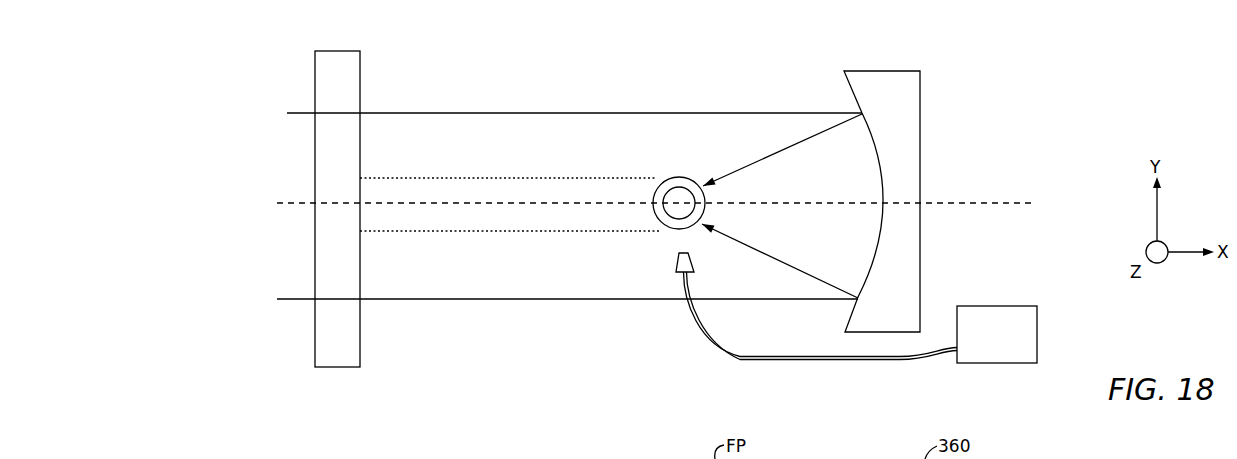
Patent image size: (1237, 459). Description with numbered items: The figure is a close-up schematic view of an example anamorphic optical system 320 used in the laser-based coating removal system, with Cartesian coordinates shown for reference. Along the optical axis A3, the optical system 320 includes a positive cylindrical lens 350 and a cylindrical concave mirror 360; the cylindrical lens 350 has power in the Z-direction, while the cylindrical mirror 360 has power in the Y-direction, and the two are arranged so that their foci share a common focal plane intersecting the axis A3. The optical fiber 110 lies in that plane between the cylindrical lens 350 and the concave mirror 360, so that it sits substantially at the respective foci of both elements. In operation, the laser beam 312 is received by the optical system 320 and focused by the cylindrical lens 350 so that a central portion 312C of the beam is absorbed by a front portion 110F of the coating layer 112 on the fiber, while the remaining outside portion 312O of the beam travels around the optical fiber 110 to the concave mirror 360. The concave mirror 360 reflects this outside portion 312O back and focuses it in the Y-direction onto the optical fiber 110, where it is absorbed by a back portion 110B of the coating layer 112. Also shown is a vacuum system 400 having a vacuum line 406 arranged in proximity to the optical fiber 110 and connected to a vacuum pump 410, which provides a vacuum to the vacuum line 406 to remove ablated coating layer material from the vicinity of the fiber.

The positive cylindrical lens 350 is at (333, 51).
The laser beam 312 is at (293, 294).
The central portion of laser beam 312C is at (490, 177).
The outside portion of laser beam 312O is at (473, 282).
The optical axis A3 is at (973, 203).
The optical fiber 110 is at (679, 170).
The coating layer 112 is at (688, 180).
The front portion of coating layer 110F is at (653, 199).
The back portion of coating layer 110B is at (706, 213).
The cylindrical concave mirror 360 is at (900, 71).
The anamorphic optical system 320 is at (1010, 109).
The vacuum system 400 is at (689, 352).
The vacuum line 406 is at (740, 355).
The vacuum pump 410 is at (1008, 348).